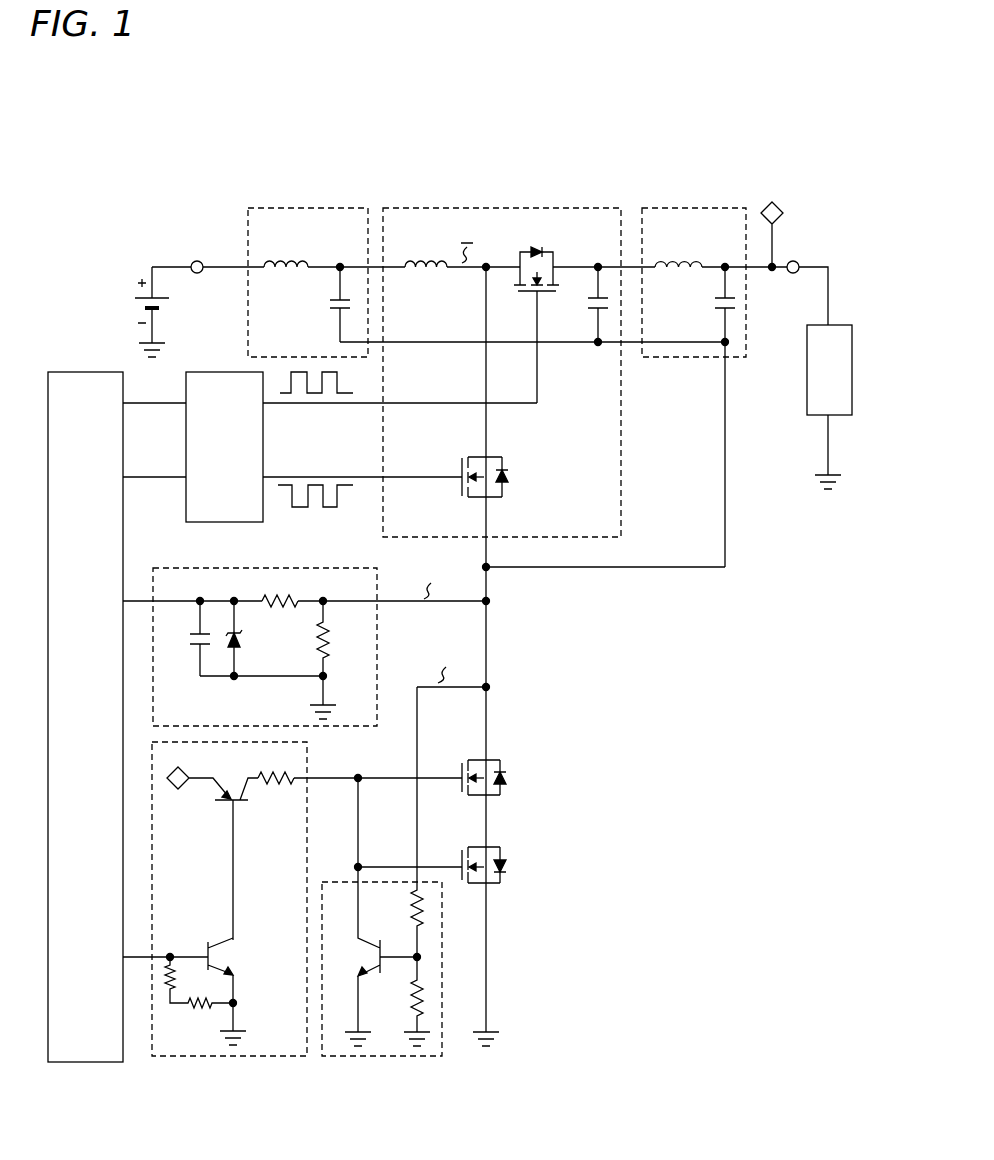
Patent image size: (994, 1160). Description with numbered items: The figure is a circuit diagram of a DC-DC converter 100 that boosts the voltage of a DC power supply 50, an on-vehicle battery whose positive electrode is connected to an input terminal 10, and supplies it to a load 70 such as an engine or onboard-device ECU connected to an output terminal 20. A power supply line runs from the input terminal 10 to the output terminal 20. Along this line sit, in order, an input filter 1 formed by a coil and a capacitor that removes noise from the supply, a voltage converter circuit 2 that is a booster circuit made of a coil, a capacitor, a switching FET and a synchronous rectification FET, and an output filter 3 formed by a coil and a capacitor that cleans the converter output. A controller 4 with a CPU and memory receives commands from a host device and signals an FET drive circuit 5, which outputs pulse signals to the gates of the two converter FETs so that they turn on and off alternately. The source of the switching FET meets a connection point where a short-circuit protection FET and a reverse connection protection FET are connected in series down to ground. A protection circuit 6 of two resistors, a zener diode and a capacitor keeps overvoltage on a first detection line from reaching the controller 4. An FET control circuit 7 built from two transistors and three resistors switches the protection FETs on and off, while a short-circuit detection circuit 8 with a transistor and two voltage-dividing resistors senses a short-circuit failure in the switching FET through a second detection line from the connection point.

The DC-DC converter 100 is at (580, 144).
The input filter 1 is at (303, 208).
The voltage converter circuit 2 is at (485, 208).
The output filter 3 is at (689, 207).
The controller 4 is at (82, 372).
The FET drive circuit 5 is at (264, 437).
The protection circuit 6 is at (380, 657).
The FET control circuit 7 is at (308, 837).
The short-circuit detection circuit 8 is at (443, 971).
The input terminal 10 is at (195, 261).
The output terminal 20 is at (794, 261).
The DC power supply 50 is at (126, 308).
The load 70 is at (806, 378).